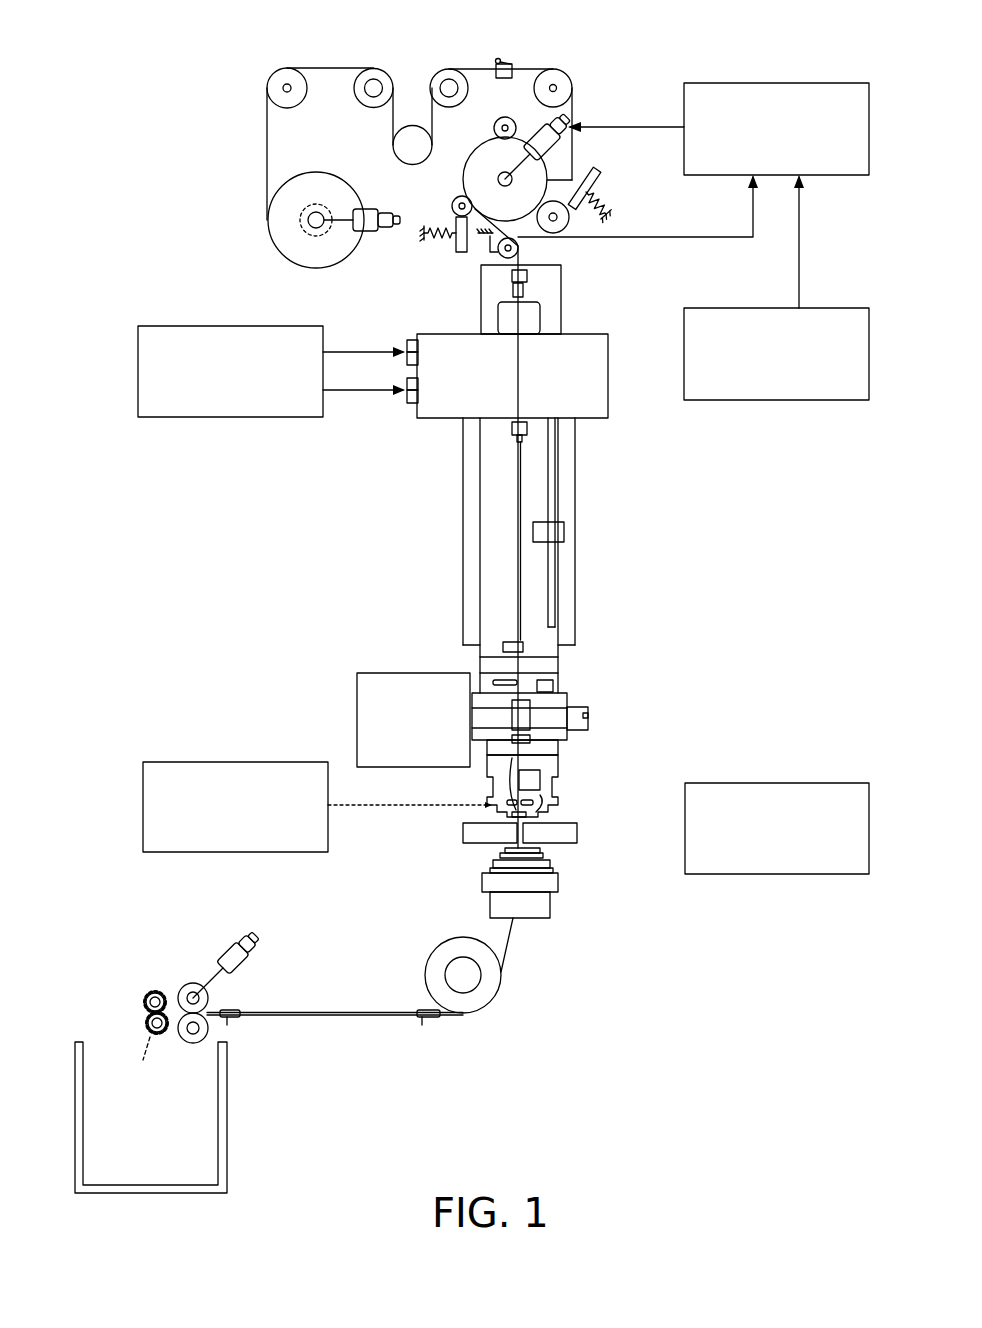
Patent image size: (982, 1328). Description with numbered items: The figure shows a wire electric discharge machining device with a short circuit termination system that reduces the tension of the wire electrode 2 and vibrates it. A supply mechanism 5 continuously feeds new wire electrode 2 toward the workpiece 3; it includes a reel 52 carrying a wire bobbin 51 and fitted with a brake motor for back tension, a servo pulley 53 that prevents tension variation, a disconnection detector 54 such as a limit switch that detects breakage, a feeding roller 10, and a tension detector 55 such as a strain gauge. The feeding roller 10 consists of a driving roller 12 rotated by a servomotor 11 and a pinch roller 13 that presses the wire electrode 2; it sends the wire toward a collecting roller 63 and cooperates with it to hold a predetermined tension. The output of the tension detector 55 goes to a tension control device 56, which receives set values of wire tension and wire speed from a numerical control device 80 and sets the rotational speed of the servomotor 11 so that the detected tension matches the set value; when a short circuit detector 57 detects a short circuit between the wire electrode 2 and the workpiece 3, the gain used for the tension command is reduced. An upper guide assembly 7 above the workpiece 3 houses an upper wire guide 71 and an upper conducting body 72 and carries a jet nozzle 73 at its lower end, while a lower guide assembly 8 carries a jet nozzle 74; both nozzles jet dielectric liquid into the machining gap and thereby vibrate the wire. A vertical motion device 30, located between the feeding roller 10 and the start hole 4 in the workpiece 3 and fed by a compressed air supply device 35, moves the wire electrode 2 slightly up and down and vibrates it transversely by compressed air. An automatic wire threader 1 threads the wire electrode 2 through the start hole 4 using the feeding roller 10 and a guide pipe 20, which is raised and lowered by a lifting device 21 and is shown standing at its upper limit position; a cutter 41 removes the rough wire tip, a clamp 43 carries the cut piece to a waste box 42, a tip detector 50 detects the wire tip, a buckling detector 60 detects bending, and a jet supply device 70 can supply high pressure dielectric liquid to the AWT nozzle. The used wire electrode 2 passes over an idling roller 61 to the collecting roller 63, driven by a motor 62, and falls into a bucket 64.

The automatic wire threader 1 is at (622, 309).
The wire electrode 2 is at (335, 67).
The workpiece 3 is at (463, 827).
The start hole 4 is at (545, 845).
The supply mechanism 5 is at (352, 30).
The upper guide assembly 7 is at (487, 787).
The lower guide assembly 8 is at (552, 897).
The feeding roller 10 is at (462, 167).
The servomotor 11 is at (563, 113).
The driving roller 12 is at (577, 177).
The pinch roller 13 is at (458, 200).
The guide pipe 20 is at (517, 517).
The lifting device 21 is at (557, 510).
The vertical motion device 30 is at (597, 420).
The compressed air supply device 35 is at (298, 325).
The cutter 41 is at (575, 672).
The waste box 42 is at (408, 677).
The clamp 43 is at (588, 715).
The tip detector 50 is at (532, 738).
The wire bobbin 51 is at (310, 265).
The reel 52 is at (297, 222).
The servo pulley 53 is at (395, 157).
The disconnection detector 54 is at (508, 63).
The tension detector 55 is at (487, 242).
The tension control device 56 is at (723, 82).
The short circuit detector 57 is at (772, 782).
The buckling detector 60 is at (513, 290).
The idling roller 61 is at (443, 952).
The motor 62 is at (225, 958).
The collecting roller 63 is at (178, 985).
The bucket 64 is at (227, 1100).
The jet supply device 70 is at (258, 760).
The upper wire guide 71 is at (533, 797).
The upper conducting body 72 is at (540, 770).
The jet nozzle 73 is at (527, 817).
The jet nozzle 74 is at (503, 852).
The numerical control device 80 is at (727, 306).